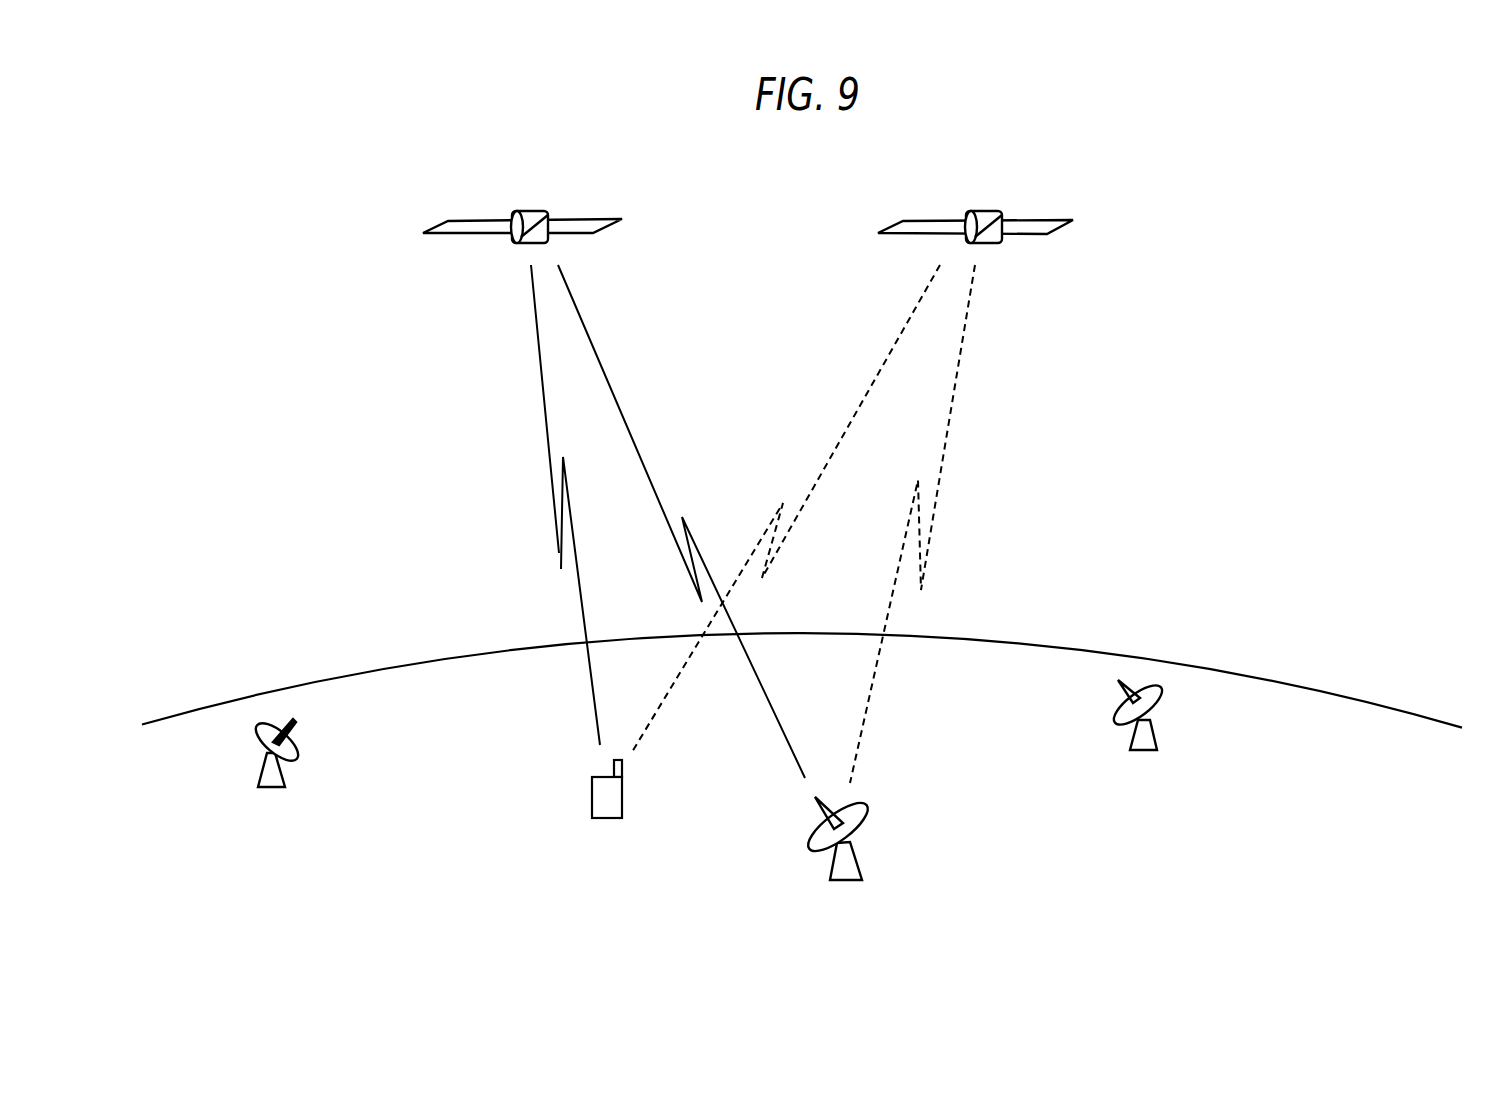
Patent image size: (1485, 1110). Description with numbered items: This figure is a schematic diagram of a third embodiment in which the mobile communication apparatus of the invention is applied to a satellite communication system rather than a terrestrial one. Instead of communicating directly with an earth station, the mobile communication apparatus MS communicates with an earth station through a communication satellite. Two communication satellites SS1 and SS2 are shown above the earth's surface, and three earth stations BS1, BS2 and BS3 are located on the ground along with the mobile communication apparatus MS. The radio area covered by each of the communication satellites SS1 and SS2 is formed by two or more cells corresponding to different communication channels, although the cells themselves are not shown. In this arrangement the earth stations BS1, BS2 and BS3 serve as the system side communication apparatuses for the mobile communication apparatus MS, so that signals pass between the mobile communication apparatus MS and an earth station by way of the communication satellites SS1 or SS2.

The communication satellite SS1 is at (462, 229).
The communication satellite SS2 is at (906, 230).
The earth station BS1 is at (832, 868).
The earth station BS2 is at (1130, 738).
The earth station BS3 is at (283, 777).
The mobile communication apparatus MS is at (592, 797).